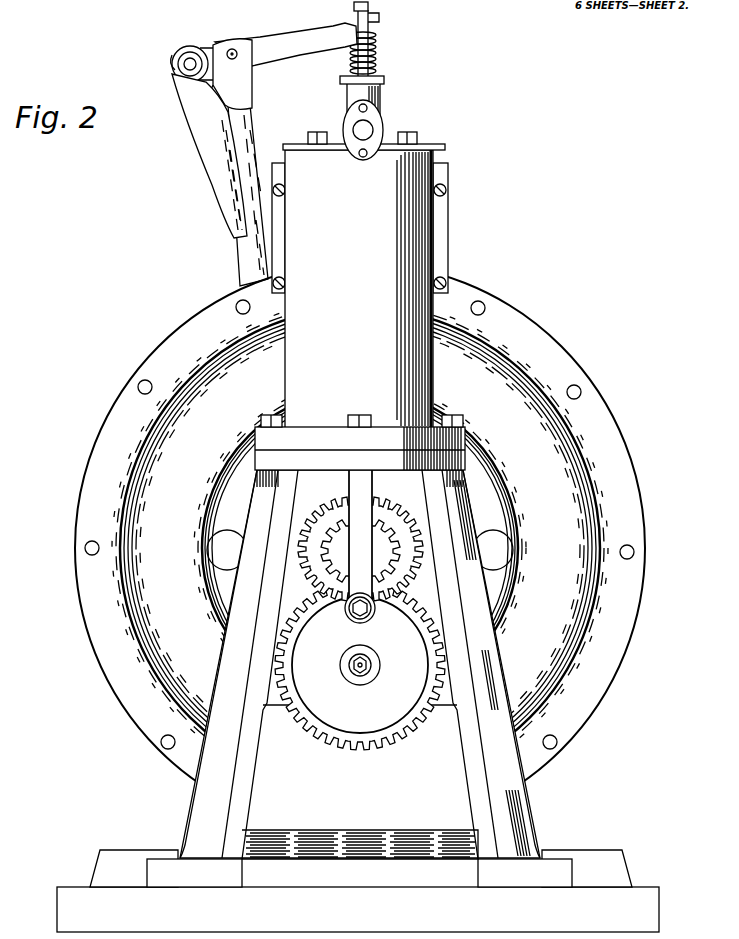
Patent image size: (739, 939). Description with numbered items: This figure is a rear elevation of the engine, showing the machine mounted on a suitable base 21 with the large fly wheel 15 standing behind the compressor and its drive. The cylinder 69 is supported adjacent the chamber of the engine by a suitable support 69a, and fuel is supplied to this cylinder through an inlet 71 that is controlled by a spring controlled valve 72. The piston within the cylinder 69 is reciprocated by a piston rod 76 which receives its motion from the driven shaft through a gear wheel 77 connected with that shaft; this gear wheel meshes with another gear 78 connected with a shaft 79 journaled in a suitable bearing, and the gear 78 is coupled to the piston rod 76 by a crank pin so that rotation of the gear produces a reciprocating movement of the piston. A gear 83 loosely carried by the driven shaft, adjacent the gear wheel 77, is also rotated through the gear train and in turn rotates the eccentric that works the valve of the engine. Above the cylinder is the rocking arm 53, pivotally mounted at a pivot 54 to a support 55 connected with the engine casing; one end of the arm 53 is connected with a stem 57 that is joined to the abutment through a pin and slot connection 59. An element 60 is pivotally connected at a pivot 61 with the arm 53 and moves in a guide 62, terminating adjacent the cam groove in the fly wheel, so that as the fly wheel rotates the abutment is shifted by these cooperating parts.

The flywheel 15 is at (552, 360).
The base 21 is at (573, 866).
The rocking arm 53 is at (287, 44).
The pivot 54 is at (190, 58).
The support 55 is at (222, 138).
The stem 57 is at (368, 7).
The pin and slot connection 59 is at (378, 28).
The element 60 is at (242, 68).
The pivotal connection 61 is at (232, 49).
The guide 62 is at (248, 257).
The cylinder 69 is at (413, 266).
The support 69a is at (480, 793).
The inlet 71 is at (378, 132).
The spring controlled valve 72 is at (376, 68).
The piston rod 76 is at (367, 487).
The gear wheel 77 is at (379, 540).
The gear 78 is at (423, 713).
The shaft 79 is at (360, 676).
The gear 83 is at (330, 513).